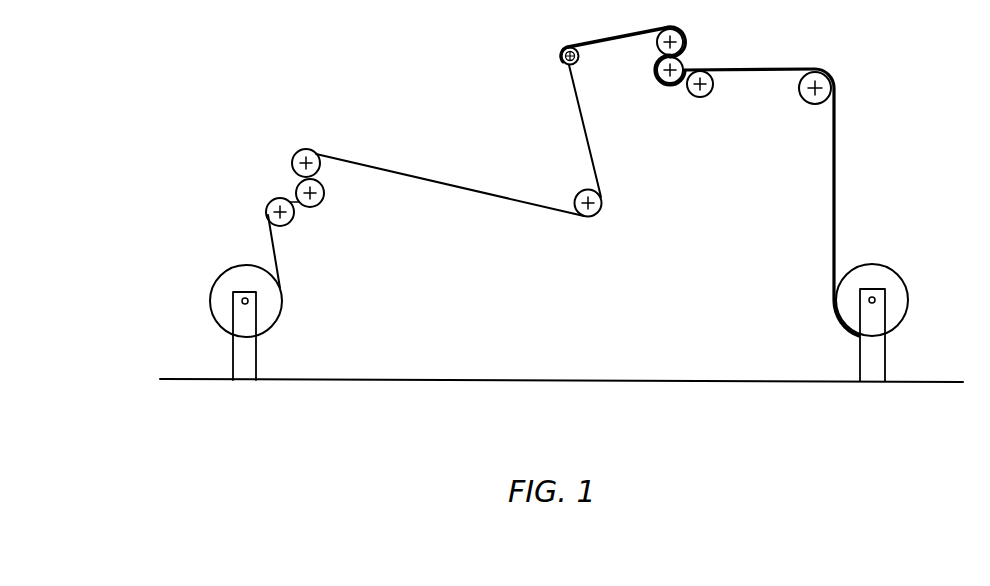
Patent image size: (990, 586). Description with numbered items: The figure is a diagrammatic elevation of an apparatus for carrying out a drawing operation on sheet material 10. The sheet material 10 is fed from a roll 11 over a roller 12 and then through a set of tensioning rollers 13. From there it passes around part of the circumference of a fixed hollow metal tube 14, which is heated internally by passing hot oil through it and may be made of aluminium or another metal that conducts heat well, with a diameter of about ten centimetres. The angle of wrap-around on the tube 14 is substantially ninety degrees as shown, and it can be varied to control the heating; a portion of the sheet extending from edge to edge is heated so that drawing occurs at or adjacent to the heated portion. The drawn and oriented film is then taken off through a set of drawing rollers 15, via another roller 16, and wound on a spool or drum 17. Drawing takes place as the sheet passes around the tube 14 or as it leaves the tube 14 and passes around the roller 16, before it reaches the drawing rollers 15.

The sheet material 10 is at (837, 195).
The roll 11 is at (875, 267).
The roller 12 is at (802, 102).
The set of tensioning rollers 13 is at (693, 55).
The fixed hollow metal tube 14 is at (577, 62).
The set of drawing rollers 15 is at (285, 188).
The roller 16 is at (580, 192).
The spool or drum 17 is at (232, 268).